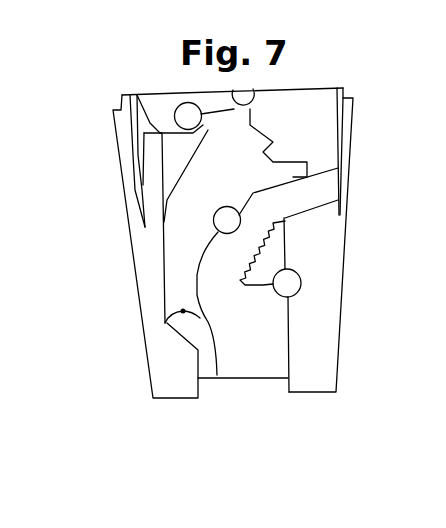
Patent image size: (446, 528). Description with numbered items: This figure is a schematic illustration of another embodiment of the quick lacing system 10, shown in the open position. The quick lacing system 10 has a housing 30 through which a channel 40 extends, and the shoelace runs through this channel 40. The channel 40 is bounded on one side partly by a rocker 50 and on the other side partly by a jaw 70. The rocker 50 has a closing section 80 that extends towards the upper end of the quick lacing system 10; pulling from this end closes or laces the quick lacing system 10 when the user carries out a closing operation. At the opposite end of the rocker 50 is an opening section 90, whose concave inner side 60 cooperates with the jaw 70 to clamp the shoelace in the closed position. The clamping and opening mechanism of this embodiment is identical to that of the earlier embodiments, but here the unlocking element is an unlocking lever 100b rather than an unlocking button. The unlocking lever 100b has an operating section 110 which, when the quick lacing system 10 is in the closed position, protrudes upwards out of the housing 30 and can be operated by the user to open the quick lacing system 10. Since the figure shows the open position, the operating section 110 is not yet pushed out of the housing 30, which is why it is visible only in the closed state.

The quick lacing system 10 is at (364, 92).
The operating section 110 is at (149, 86).
The unlocking lever 100b is at (240, 105).
The closing section 80 is at (290, 173).
The rocker 50 is at (190, 217).
The housing 30 is at (333, 253).
The jaw 70 is at (270, 258).
The concave inner side 60 is at (216, 272).
The channel 40 is at (263, 368).
The opening section 90 is at (217, 375).